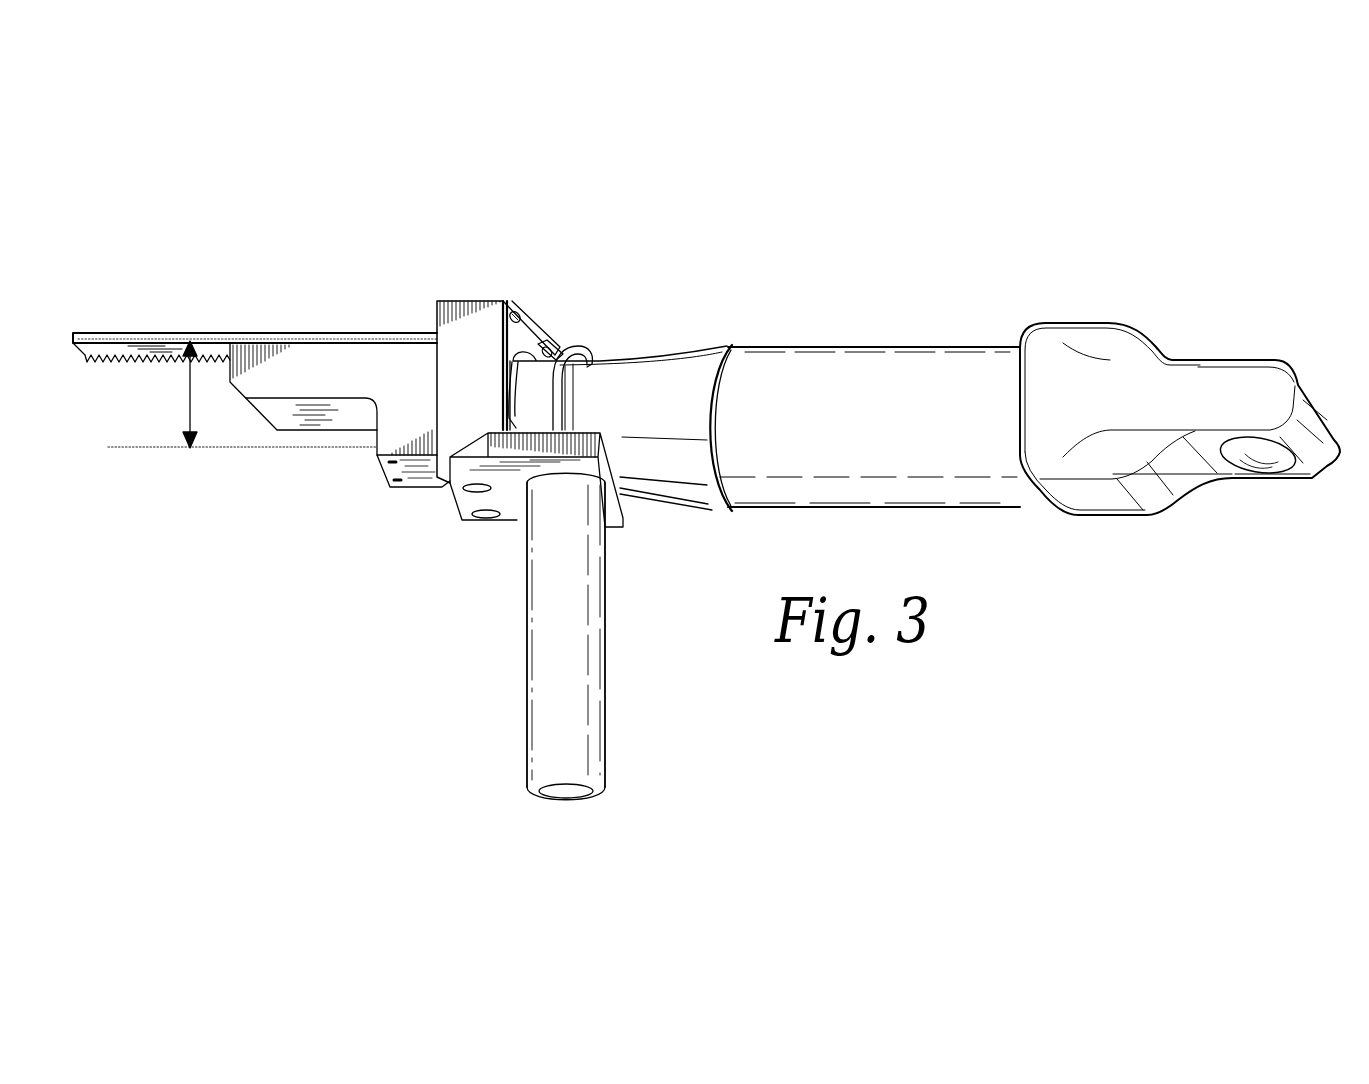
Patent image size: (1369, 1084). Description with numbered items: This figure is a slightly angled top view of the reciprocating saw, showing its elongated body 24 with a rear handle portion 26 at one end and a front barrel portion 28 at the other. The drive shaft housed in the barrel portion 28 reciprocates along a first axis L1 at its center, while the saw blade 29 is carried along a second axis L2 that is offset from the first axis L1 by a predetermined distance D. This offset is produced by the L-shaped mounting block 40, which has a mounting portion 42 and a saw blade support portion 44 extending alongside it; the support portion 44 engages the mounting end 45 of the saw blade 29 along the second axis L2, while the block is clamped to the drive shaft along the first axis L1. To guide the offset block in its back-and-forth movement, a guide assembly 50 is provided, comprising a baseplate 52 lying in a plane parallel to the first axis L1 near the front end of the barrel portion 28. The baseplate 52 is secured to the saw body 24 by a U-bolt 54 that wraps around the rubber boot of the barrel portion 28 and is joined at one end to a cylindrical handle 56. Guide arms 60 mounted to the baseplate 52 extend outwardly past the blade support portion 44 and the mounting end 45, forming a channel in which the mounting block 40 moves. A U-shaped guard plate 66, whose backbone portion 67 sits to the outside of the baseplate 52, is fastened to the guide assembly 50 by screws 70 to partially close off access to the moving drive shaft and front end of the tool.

The elongated body 24 is at (964, 360).
The rear handle portion 26 is at (1173, 378).
The front barrel portion 28 is at (636, 370).
The saw blade 29 is at (130, 333).
The mounting block 40 is at (297, 447).
The mounting portion 42 is at (374, 457).
The saw blade support portion 44 is at (337, 368).
The mounting end of saw blade 45 is at (287, 318).
The guide assembly 50 is at (545, 616).
The baseplate 52 is at (462, 502).
The U-bolt 54 is at (576, 344).
The cylindrical handle 56 is at (605, 672).
The guide arms 60 is at (479, 369).
The guard plate 66 is at (542, 318).
The backbone portion 67 is at (533, 320).
The screws 70 is at (514, 311).
The predetermined distance D is at (190, 390).
The first axis L1 is at (120, 448).
The second axis L2 is at (118, 343).